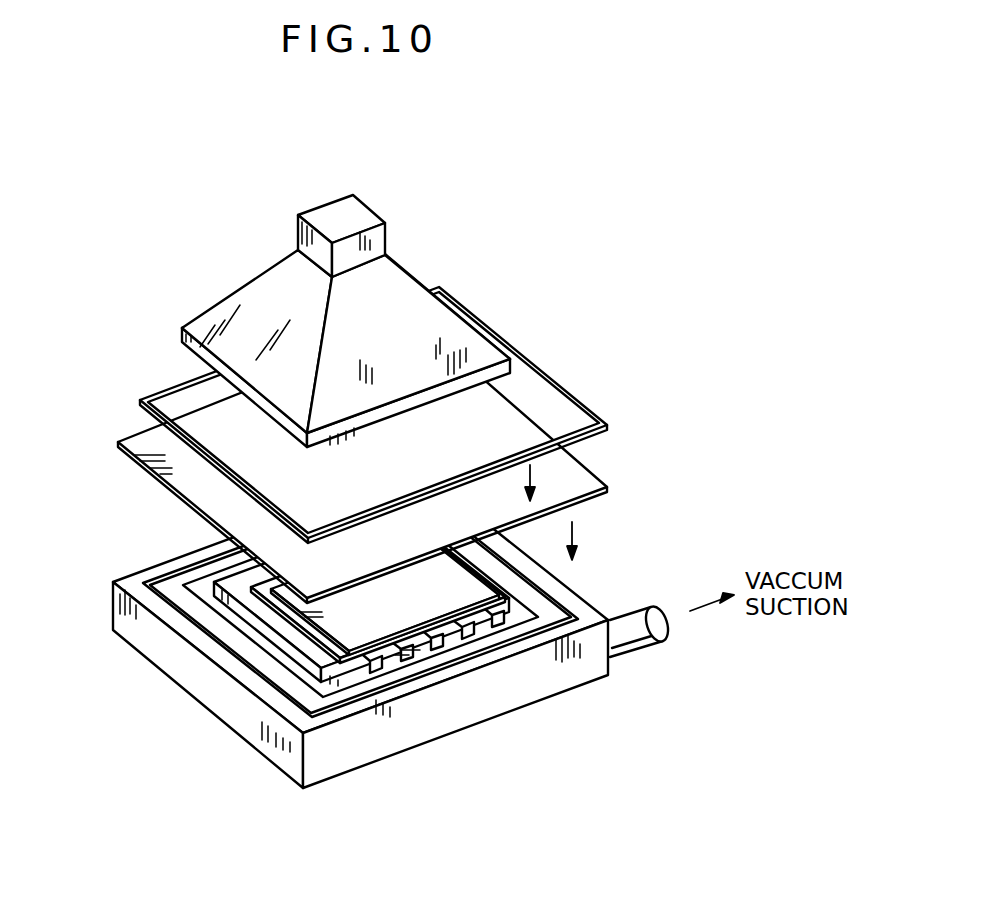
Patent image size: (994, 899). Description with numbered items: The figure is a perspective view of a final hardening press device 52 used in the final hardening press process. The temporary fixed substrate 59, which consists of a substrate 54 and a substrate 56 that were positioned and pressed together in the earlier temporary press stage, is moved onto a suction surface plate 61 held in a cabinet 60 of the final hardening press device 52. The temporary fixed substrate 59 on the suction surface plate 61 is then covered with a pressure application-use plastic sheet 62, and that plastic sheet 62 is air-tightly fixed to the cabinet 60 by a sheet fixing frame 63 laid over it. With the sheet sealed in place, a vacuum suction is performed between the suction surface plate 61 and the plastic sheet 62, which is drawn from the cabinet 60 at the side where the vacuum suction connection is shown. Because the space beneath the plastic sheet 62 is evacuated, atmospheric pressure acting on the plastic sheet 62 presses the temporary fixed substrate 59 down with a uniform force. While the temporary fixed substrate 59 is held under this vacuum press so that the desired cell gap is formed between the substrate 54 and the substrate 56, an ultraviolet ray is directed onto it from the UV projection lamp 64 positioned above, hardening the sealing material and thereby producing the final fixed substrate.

The final hardening press device 52 is at (131, 378).
The substrate 54 is at (453, 594).
The substrate 56 is at (493, 615).
The temporary fixed substrate 59 is at (419, 697).
The cabinet 60 is at (590, 667).
The suction surface plate 61 is at (352, 684).
The pressure application-use plastic sheet 62 is at (592, 480).
The sheet fixing frame 63 is at (587, 410).
The UV projection lamp 64 is at (417, 307).